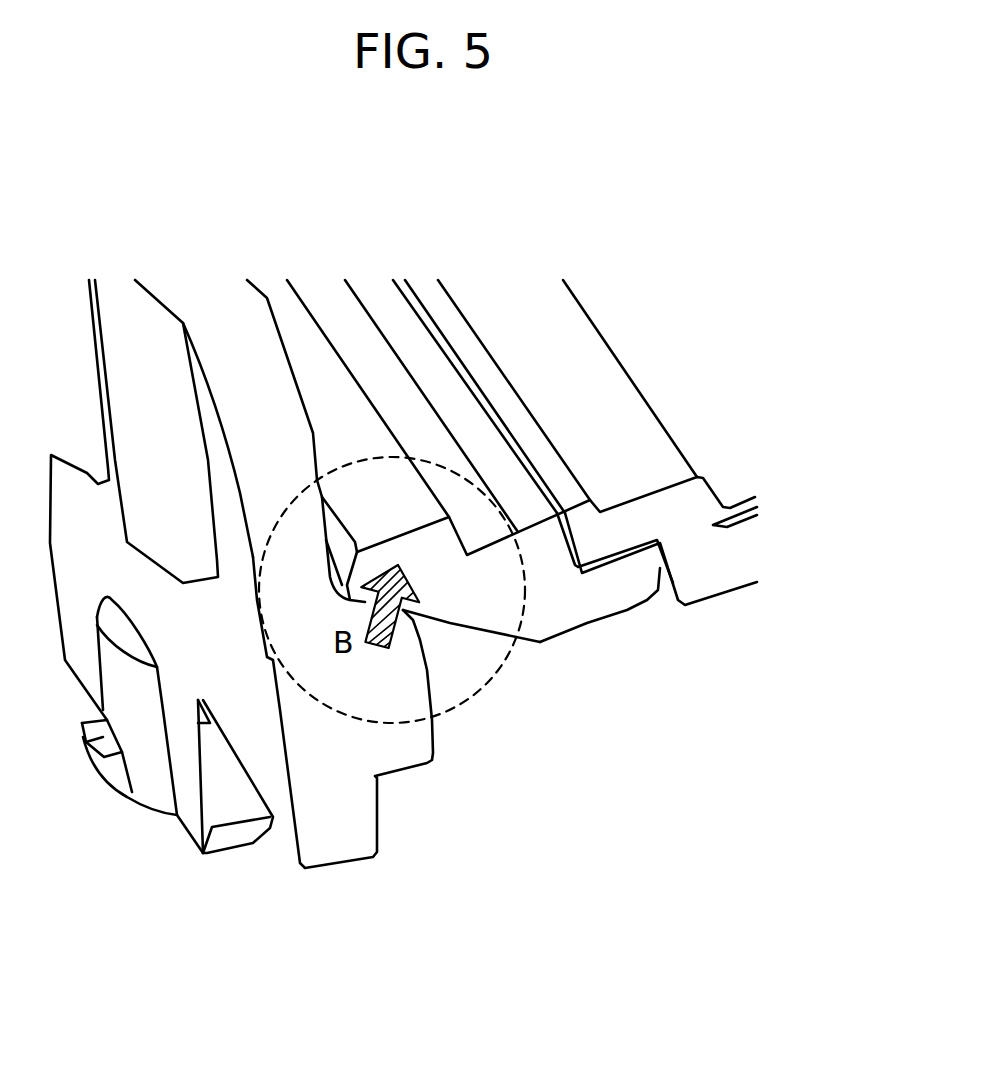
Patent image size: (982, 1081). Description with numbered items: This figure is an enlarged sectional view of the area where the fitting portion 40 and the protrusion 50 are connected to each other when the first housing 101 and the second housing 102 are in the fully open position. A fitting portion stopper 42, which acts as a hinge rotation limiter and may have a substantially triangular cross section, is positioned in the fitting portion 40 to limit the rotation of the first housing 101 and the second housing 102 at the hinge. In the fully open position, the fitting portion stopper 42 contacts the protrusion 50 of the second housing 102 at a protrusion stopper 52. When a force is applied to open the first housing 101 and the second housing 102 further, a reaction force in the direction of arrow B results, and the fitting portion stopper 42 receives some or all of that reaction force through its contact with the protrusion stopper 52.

The protrusion 50 is at (227, 335).
The first housing 101 is at (723, 463).
The second housing 102 is at (332, 795).
The protrusion stopper 52 is at (427, 668).
The fitting portion stopper 42 is at (448, 620).
The fitting portion 40 is at (612, 592).